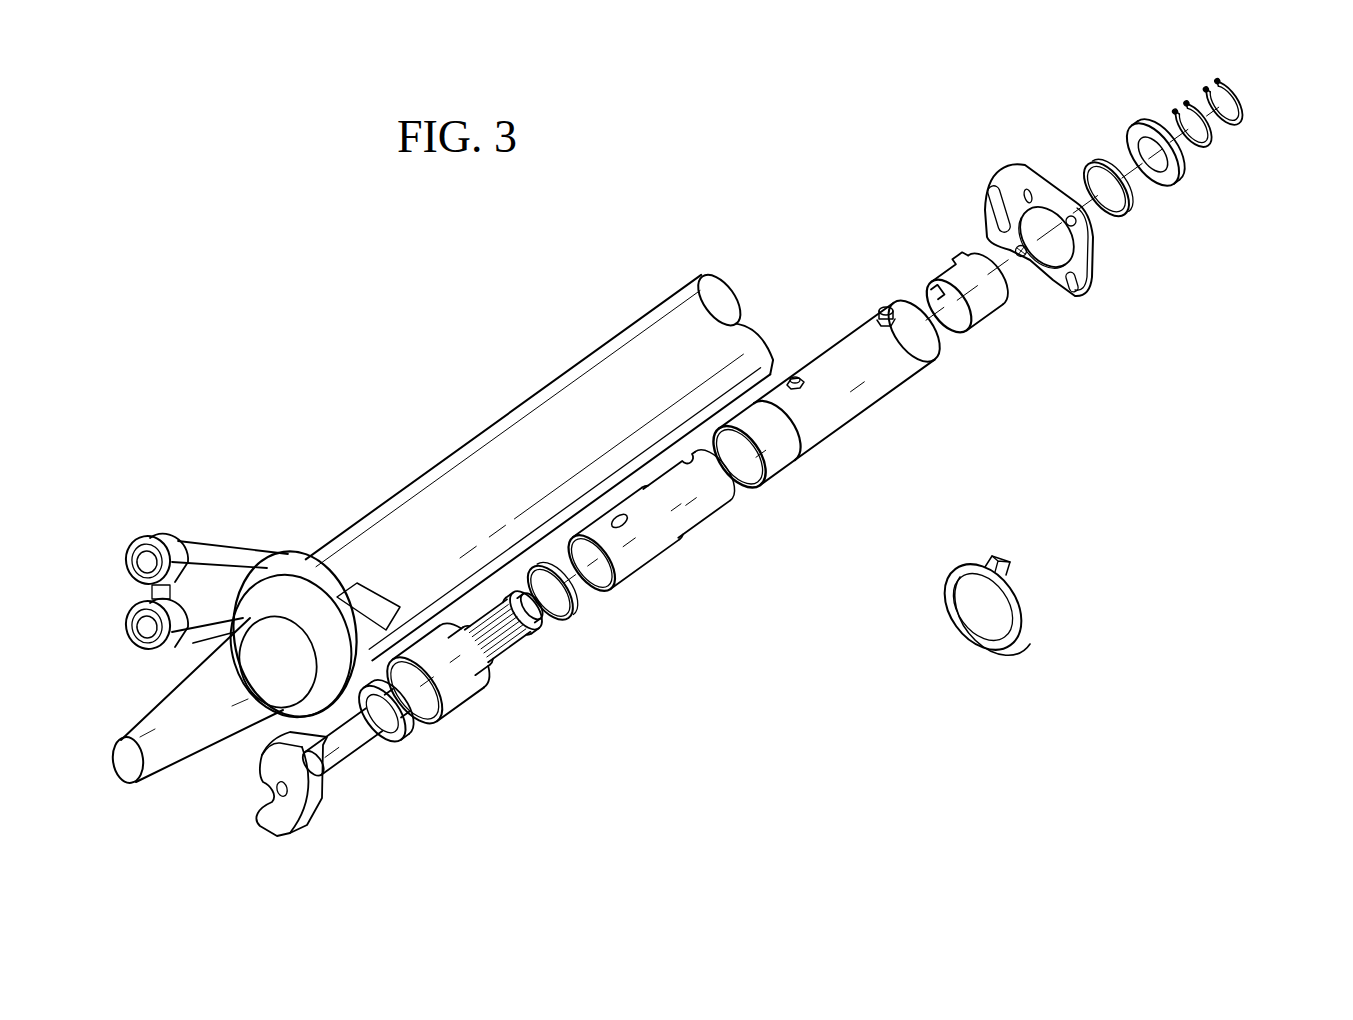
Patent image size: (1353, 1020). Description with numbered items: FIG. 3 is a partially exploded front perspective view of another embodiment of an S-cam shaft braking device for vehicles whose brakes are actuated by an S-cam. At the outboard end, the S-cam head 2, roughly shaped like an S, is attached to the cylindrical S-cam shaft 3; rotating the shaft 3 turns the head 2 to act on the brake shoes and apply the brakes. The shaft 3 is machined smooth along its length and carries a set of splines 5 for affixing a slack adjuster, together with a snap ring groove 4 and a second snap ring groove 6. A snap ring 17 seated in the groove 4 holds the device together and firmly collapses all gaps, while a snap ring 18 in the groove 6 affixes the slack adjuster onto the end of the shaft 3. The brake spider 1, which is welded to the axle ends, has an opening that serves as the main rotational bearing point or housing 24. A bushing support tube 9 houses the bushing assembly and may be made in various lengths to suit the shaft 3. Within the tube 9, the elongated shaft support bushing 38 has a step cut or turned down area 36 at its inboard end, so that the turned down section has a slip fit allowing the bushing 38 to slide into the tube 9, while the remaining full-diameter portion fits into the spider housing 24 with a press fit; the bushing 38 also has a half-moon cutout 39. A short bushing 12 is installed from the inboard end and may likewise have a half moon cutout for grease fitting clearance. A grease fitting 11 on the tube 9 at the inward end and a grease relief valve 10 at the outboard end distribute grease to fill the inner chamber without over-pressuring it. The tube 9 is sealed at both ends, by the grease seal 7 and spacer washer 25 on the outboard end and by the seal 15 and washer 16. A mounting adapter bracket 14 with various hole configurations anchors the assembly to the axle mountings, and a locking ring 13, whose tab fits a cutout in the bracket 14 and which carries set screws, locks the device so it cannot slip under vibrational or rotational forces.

The brake spider 1 is at (215, 548).
The S-cam head 2 is at (317, 807).
The S-cam shaft 3 is at (358, 743).
The snap ring groove 4 is at (493, 663).
The splines 5 is at (513, 642).
The snap ring groove 6 is at (533, 627).
The grease seal 7 is at (575, 608).
The bushing support tube 9 is at (867, 395).
The grease relief valve 10 is at (792, 377).
The grease fitting 11 is at (887, 310).
The short bushing 12 is at (990, 307).
The locking ring 13 is at (967, 565).
The mounting adapter bracket 14 is at (1010, 163).
The seal 15 is at (1127, 210).
The washer 16 is at (1173, 173).
The snap ring 17 is at (1180, 112).
The snap ring 18 is at (1240, 120).
The main rotational bearing housing 24 is at (463, 693).
The spacer washer 25 is at (403, 733).
The step cut or turned down area 36 is at (677, 527).
The shaft support bushing 38 is at (644, 567).
The half-moon cutout 39 is at (748, 480).